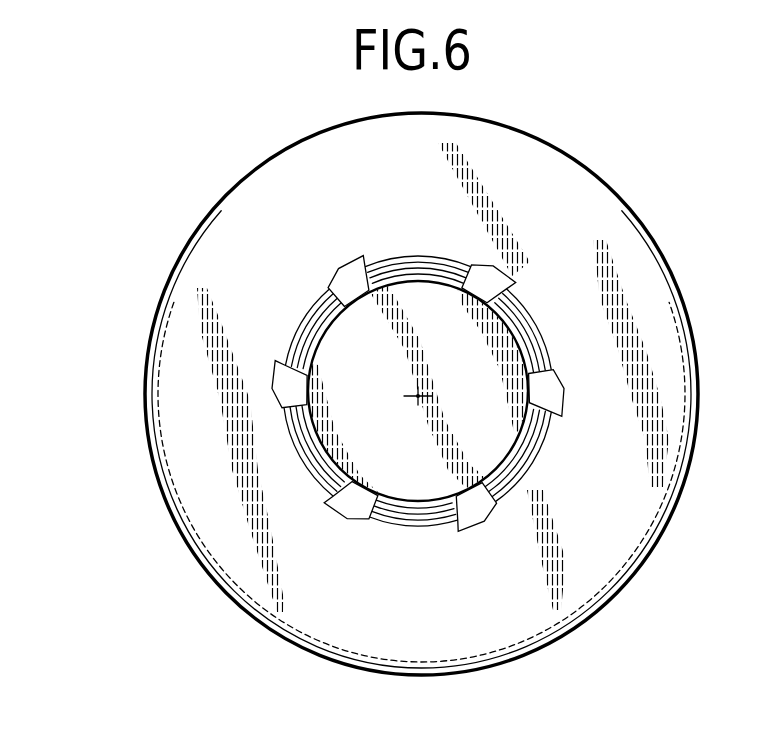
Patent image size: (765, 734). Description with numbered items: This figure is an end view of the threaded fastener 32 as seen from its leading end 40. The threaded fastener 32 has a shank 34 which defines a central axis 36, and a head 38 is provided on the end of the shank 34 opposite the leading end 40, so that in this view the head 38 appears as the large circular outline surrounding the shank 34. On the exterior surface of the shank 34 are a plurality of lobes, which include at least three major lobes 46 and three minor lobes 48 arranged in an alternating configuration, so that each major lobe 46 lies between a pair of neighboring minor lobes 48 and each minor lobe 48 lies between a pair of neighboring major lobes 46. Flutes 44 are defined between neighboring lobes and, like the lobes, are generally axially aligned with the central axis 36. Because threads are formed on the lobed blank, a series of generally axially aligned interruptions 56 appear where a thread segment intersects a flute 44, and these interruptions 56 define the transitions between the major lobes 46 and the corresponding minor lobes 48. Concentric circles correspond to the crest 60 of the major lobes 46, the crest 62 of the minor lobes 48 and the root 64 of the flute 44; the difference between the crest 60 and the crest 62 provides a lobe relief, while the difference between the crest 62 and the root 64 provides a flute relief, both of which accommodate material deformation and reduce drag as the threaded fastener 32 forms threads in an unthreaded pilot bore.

The threaded fastener 32 is at (133, 270).
The shank 34 is at (253, 432).
The central axis 36 is at (420, 398).
The head 38 is at (146, 348).
The leading end 40 is at (420, 400).
The flutes 44 is at (343, 272).
The major lobes 46 is at (418, 250).
The minor lobes 48 is at (543, 346).
The interruptions 56 is at (330, 290).
The crest of the major lobes 60 is at (445, 281).
The crest of the minor lobes 62 is at (521, 313).
The root of the flute 64 is at (489, 286).